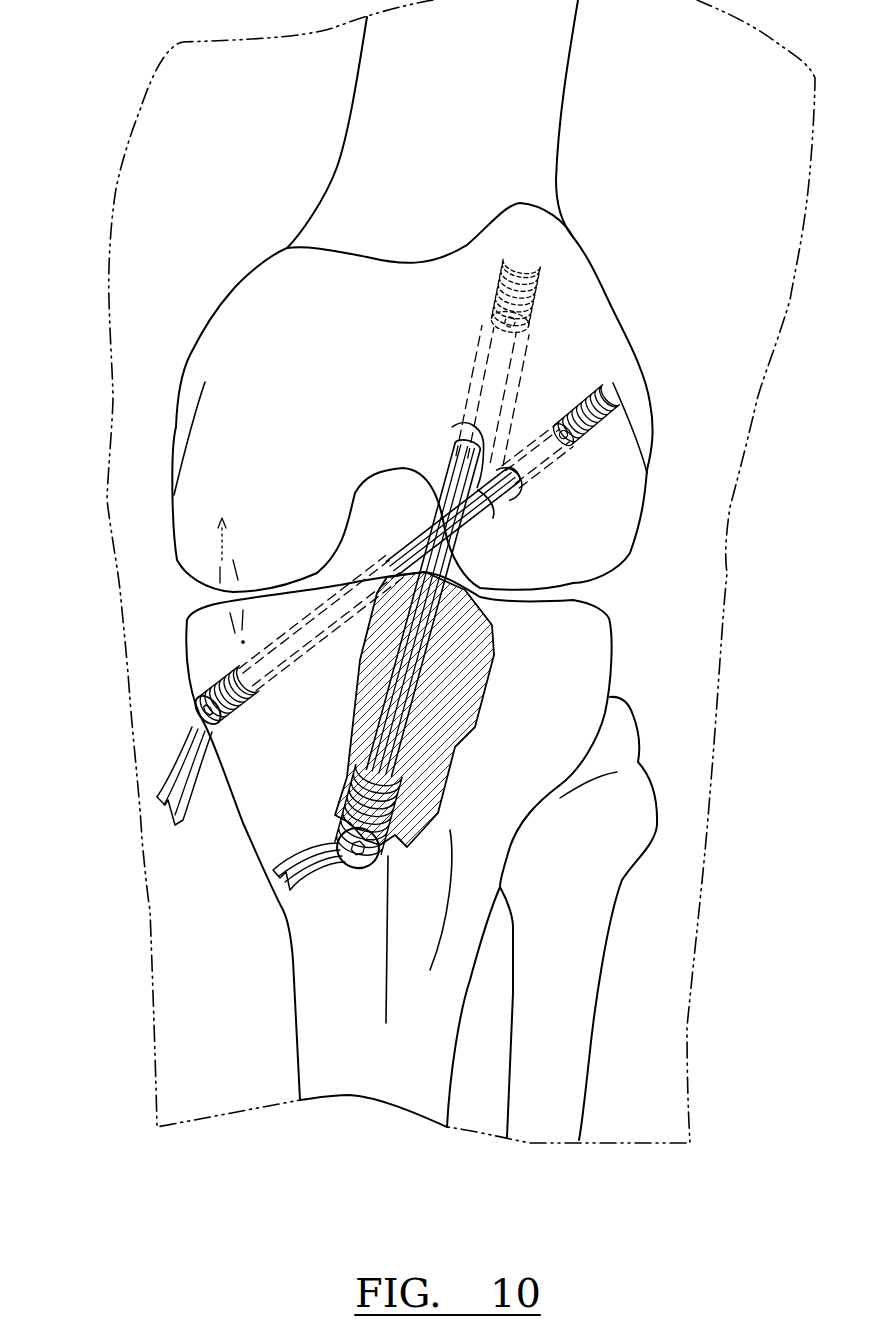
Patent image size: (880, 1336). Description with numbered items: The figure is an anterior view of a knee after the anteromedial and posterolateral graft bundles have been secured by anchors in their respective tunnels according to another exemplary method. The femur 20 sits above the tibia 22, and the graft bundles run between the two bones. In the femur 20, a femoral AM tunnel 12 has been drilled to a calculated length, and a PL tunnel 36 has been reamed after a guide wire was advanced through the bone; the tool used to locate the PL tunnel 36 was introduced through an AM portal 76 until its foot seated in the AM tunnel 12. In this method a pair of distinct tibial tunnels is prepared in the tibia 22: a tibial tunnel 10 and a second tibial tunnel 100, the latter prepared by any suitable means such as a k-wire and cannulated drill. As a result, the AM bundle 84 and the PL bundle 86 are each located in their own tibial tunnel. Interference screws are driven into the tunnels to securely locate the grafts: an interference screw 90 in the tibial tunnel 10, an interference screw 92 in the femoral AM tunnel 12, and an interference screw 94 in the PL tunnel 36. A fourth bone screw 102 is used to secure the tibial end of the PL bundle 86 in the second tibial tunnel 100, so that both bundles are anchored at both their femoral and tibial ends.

The tibial tunnel 10 is at (433, 660).
The femoral AM tunnel 12 is at (472, 380).
The femur 20 is at (375, 193).
The tibia 22 is at (312, 937).
The PL tunnel 36 is at (557, 465).
The AM portal 76 is at (217, 567).
The AM bundle 84 is at (443, 500).
The PL bundle 86 is at (493, 513).
The interference screw 90 is at (338, 822).
The interference screw 92 is at (540, 296).
The interference screw 94 is at (607, 390).
The tibial tunnel 100 is at (240, 670).
The fourth bone screw 102 is at (193, 703).